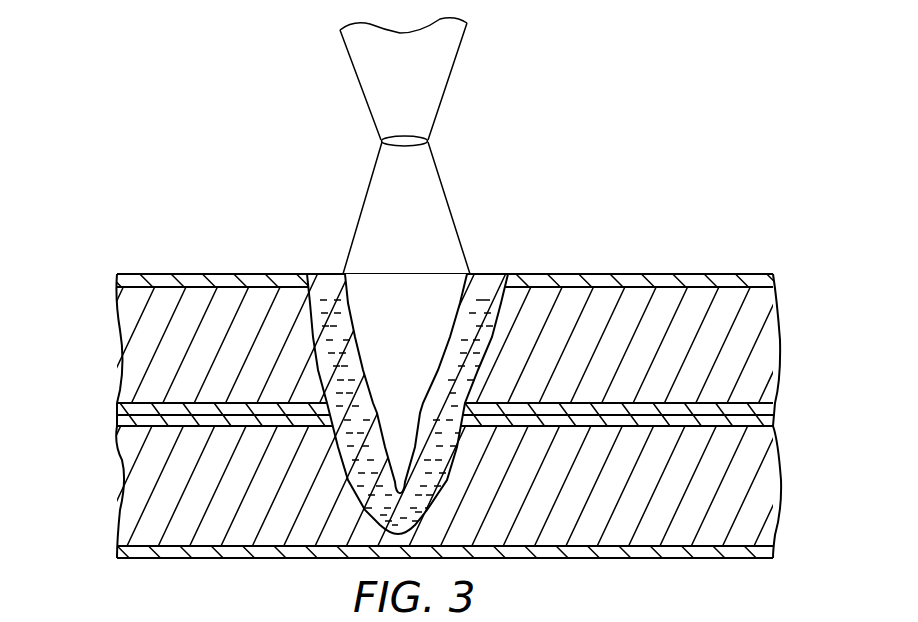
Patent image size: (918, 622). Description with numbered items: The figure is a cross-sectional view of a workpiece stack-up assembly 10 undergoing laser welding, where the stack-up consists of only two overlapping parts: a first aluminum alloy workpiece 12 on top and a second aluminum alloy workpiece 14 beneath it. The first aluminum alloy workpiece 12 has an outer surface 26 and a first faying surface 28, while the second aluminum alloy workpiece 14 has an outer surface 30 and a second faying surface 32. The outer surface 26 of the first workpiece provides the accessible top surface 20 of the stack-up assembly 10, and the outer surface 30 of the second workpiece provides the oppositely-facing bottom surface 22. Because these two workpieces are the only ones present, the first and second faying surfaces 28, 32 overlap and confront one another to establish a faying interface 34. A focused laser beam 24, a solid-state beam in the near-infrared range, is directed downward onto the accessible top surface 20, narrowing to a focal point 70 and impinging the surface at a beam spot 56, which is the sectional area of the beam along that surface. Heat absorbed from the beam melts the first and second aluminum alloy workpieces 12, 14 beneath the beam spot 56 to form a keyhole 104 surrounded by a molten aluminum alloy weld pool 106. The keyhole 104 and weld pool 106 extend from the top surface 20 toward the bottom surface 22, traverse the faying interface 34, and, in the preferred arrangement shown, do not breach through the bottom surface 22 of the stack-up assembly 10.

The workpiece stack-up assembly 10 is at (105, 375).
The first aluminum alloy workpiece 12 is at (791, 275).
The second aluminum alloy workpiece 14 is at (791, 415).
The accessible top surface 20 is at (657, 272).
The bottom surface 22 is at (542, 560).
The laser beam 24 is at (456, 53).
The outer surface 26 is at (708, 273).
The first faying surface 28 is at (566, 418).
The outer surface 30 is at (623, 560).
The second faying surface 32 is at (630, 410).
The faying interface 34 is at (507, 415).
The beam spot 56 is at (422, 273).
The focal point 70 is at (415, 137).
The keyhole 104 is at (433, 297).
The molten aluminum alloy weld pool 106 is at (327, 279).